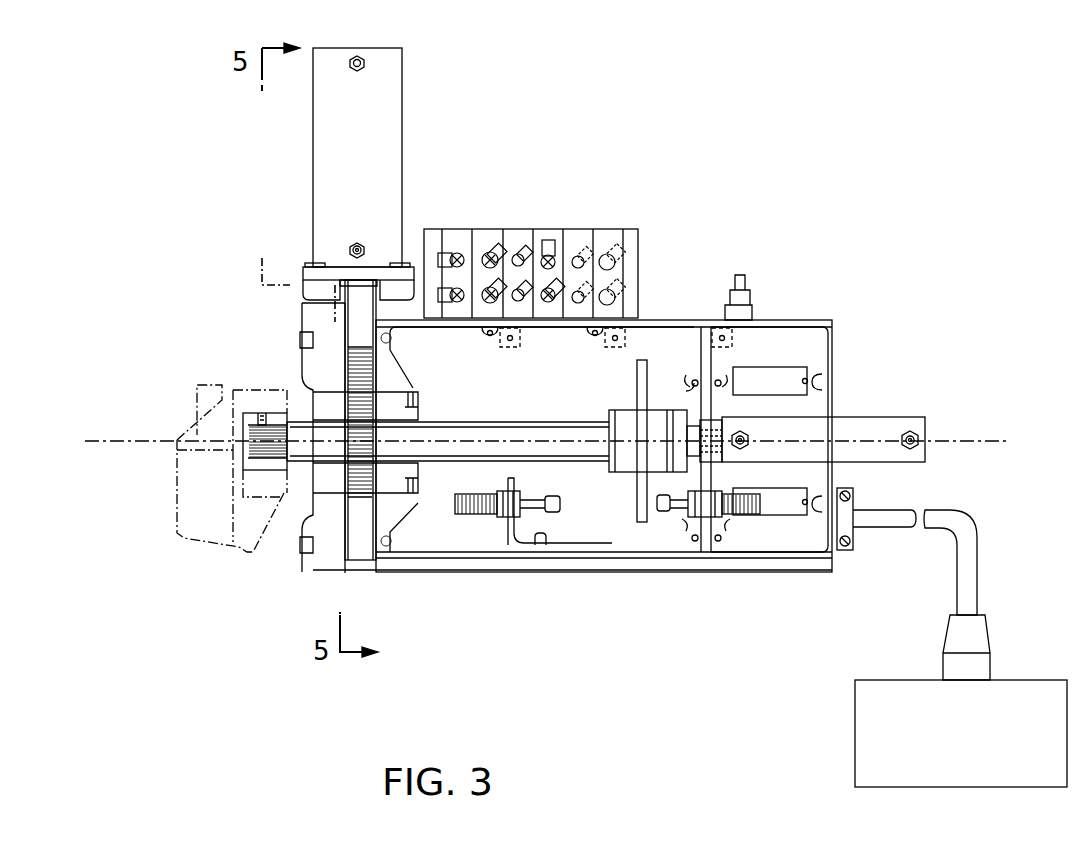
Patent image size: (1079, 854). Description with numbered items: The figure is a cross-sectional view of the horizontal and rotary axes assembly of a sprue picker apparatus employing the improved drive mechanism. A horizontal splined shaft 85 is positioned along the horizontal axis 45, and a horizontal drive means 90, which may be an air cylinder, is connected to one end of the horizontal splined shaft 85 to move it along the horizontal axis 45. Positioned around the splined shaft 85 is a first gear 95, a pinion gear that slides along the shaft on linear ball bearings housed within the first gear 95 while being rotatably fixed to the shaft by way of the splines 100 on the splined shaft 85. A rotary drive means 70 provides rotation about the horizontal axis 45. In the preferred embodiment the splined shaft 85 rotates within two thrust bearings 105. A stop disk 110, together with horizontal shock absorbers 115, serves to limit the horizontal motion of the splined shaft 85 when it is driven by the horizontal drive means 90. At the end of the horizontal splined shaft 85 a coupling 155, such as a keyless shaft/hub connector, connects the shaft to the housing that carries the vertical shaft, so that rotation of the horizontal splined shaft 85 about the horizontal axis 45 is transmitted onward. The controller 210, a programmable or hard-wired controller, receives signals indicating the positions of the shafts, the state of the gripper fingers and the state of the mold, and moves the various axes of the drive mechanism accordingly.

The horizontal axis 45 is at (120, 440).
The rotary drive means 70 is at (403, 88).
The horizontal splined shaft 85 is at (300, 395).
The first gear 95 is at (345, 383).
The splines 100 is at (518, 421).
The thrust bearings 105 is at (624, 410).
The stop disk 110 is at (644, 522).
The horizontal shock absorbers 115 is at (478, 515).
The horizontal drive means 90 is at (858, 417).
The coupling 155 is at (255, 473).
The controller 210 is at (855, 716).